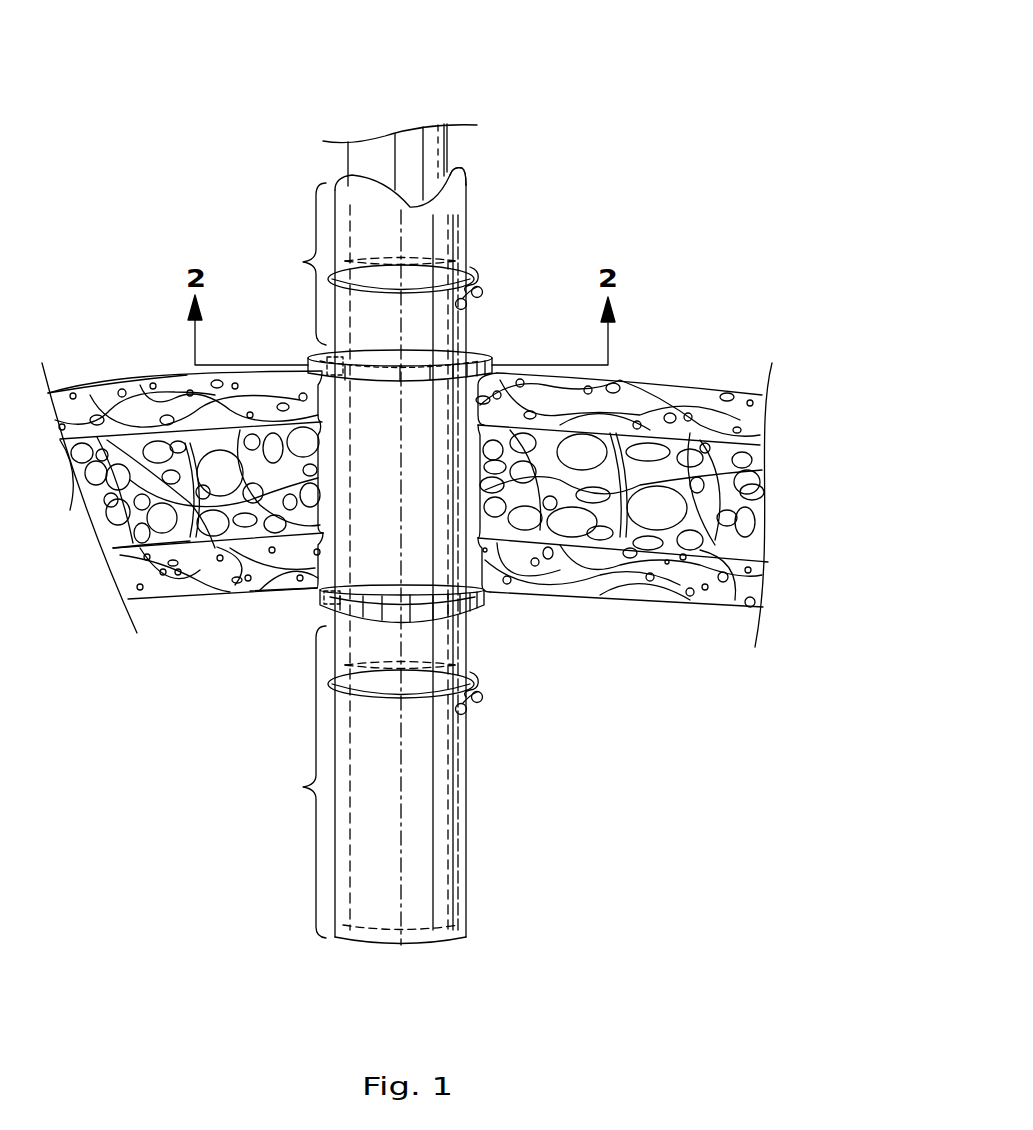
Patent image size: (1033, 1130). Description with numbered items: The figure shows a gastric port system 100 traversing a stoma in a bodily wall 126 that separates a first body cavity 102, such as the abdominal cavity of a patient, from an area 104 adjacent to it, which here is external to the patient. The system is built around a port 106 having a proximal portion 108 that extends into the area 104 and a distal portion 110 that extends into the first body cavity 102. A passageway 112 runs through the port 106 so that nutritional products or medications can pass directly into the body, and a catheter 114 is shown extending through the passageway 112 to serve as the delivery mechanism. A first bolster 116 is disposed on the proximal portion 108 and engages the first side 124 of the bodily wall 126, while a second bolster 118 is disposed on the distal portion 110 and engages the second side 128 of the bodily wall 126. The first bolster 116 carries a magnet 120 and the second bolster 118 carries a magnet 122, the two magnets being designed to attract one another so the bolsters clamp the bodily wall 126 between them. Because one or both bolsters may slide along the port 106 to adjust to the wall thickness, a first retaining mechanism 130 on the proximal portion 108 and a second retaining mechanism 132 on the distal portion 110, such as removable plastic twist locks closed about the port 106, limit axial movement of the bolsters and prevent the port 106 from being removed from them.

The gastric port system 100 is at (280, 117).
The first body cavity 102 is at (693, 705).
The area adjacent to the first body cavity 104 is at (115, 295).
The port 106 is at (438, 238).
The proximal portion 108 is at (312, 262).
The distal portion 110 is at (305, 786).
The passageway 112 is at (454, 168).
The catheter 114 is at (408, 148).
The first bolster 116 is at (483, 350).
The second bolster 118 is at (472, 620).
The magnet 120 is at (315, 352).
The magnet 122 is at (322, 608).
The first side 124 is at (187, 375).
The bodily wall 126 is at (158, 513).
The second side 128 is at (287, 590).
The first retaining mechanism 130 is at (470, 272).
The second retaining mechanism 132 is at (475, 707).